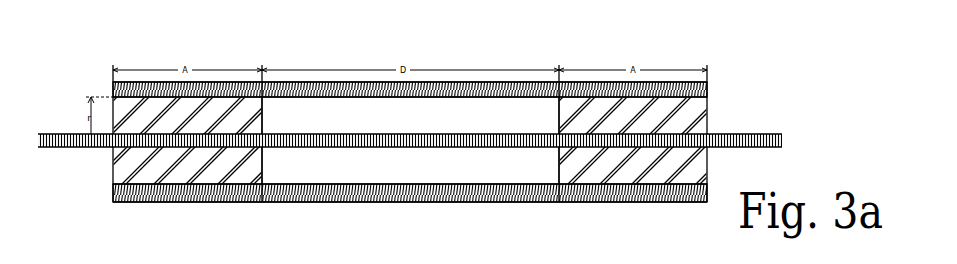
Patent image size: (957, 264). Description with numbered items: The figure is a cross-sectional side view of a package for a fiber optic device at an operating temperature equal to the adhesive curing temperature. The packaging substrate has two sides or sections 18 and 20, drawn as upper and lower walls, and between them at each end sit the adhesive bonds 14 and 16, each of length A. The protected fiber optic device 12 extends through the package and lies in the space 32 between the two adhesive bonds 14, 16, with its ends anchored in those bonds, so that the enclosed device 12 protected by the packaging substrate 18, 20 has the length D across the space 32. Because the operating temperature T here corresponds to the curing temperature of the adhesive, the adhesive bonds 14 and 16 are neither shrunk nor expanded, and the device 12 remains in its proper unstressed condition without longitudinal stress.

The fiber optic device 12 is at (328, 148).
The adhesive bond 14 is at (127, 168).
The adhesive bond 16 is at (707, 119).
The packaging substrate section 18 is at (548, 202).
The packaging substrate section 20 is at (530, 88).
The space 32 is at (447, 167).